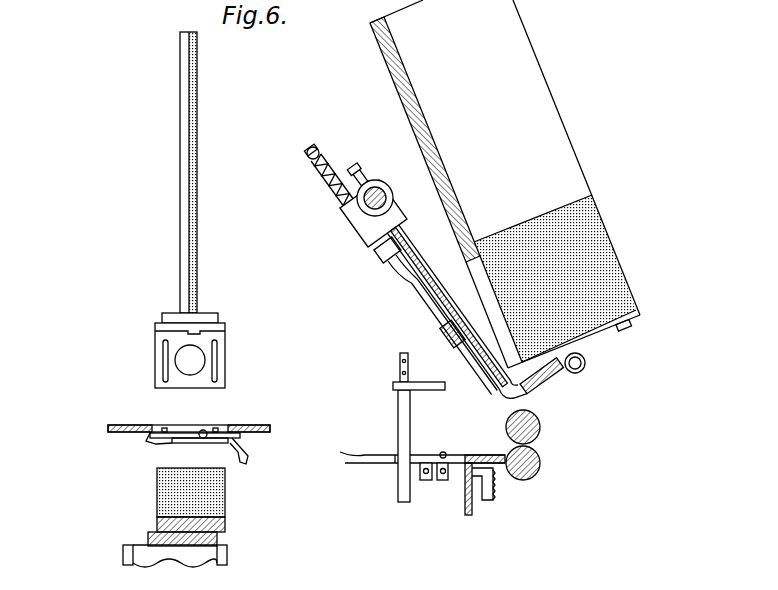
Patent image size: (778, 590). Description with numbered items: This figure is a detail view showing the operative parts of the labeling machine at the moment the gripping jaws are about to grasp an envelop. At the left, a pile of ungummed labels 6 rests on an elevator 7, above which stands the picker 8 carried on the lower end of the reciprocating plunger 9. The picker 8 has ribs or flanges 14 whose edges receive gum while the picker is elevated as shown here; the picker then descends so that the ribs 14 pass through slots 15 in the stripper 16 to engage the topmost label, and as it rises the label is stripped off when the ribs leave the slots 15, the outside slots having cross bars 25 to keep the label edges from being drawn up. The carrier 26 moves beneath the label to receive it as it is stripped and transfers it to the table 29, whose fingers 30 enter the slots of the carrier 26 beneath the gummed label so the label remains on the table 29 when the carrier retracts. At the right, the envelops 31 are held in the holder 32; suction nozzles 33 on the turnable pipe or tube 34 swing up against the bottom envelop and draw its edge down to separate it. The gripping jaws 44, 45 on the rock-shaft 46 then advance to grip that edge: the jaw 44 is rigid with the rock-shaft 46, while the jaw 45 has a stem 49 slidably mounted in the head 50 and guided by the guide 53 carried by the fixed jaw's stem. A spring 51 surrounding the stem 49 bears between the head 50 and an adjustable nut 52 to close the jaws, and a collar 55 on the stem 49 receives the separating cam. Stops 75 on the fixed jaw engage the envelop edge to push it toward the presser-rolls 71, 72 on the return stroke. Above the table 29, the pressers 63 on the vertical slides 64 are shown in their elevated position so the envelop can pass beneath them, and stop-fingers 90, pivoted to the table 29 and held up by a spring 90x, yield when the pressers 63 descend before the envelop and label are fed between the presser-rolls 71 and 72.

The reciprocating plunger 9 is at (180, 206).
The picker 8 is at (162, 319).
The ribs or flanges 14 is at (170, 366).
The slots 15 is at (180, 427).
The stripper 16 is at (150, 434).
The cross bars 25 is at (148, 440).
The carrier 26 is at (172, 444).
The pile of ungummed labels 6 is at (157, 500).
The elevator 7 is at (160, 546).
The spring 51 is at (336, 196).
The adjustable nut 52 is at (307, 156).
The head 50 is at (355, 227).
The rock-shaft 46 is at (375, 190).
The collar 55 is at (374, 258).
The stem 49 is at (411, 288).
The guide 53 is at (448, 338).
The gripping jaw 44 is at (490, 366).
The gripping jaw 45 is at (503, 386).
The stops 75 is at (520, 397).
The suction nozzles 33 is at (552, 378).
The pipe or tube 34 is at (586, 363).
The holder 32 is at (436, 146).
The envelops 31 is at (612, 262).
The fingers 30 is at (385, 463).
The table 29 is at (412, 466).
The slides 64 is at (398, 414).
The pressers 63 is at (395, 396).
The stop-fingers 90 is at (446, 455).
The spring 90x is at (494, 494).
The presser-roll 71 is at (541, 431).
The presser-roll 72 is at (541, 466).